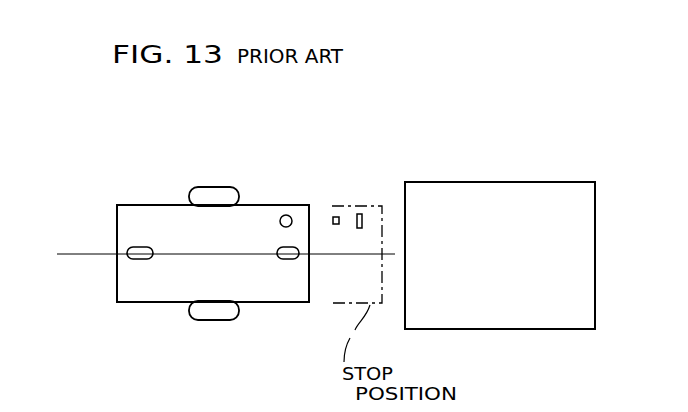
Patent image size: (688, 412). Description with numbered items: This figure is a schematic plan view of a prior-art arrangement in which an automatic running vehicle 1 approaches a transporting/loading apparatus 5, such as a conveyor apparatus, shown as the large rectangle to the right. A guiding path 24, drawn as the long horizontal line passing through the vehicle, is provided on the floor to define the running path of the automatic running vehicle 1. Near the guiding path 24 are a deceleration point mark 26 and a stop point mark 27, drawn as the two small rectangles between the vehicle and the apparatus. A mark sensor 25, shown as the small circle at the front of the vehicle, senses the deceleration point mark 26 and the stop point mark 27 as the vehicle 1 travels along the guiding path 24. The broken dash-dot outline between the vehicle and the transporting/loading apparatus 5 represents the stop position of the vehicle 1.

The automatic running vehicle 1 is at (130, 207).
The guiding path 24 is at (65, 254).
The mark sensor 25 is at (286, 214).
The deceleration point mark 26 is at (336, 215).
The stop point mark 27 is at (358, 213).
The transporting/loading apparatus 5 is at (573, 187).